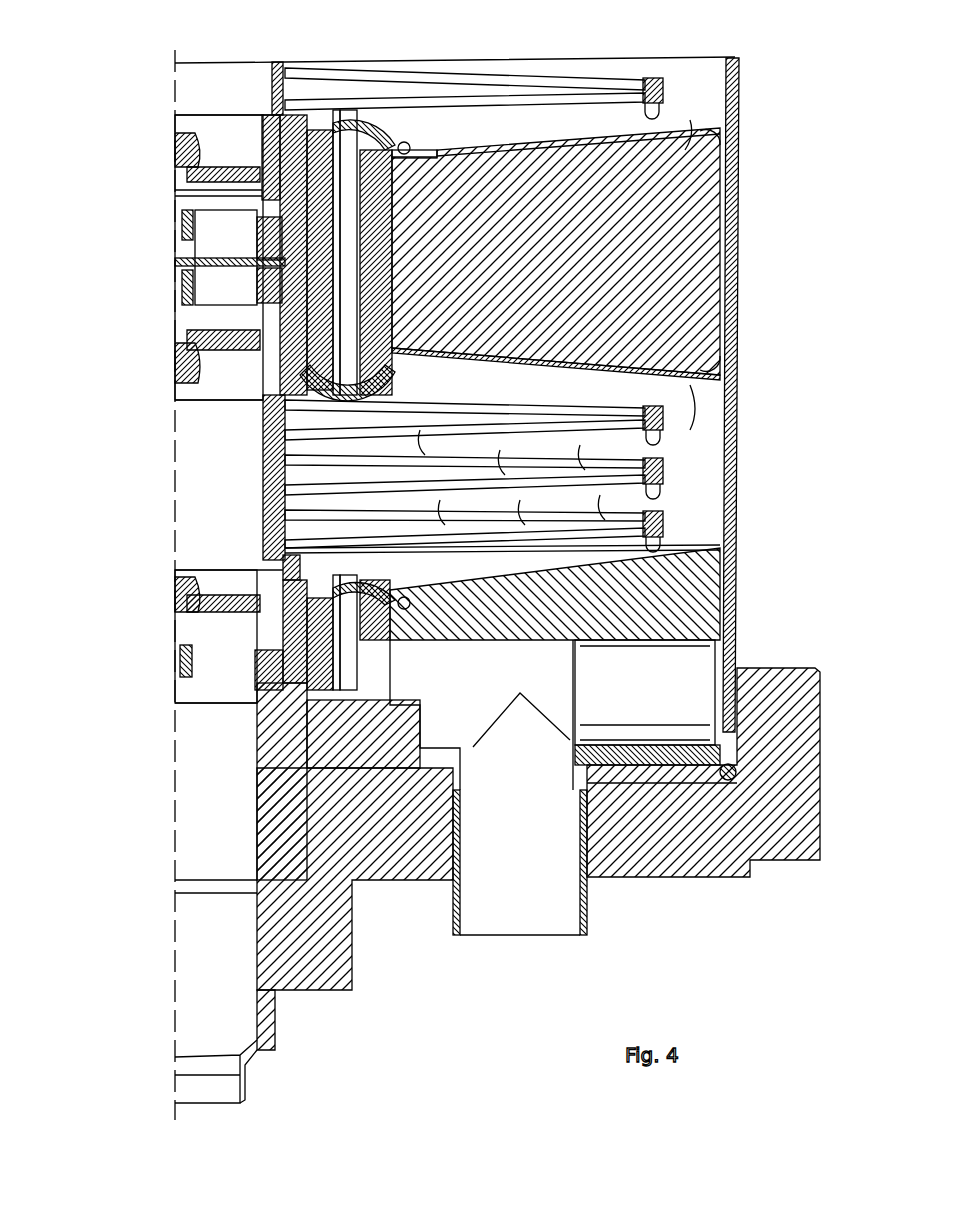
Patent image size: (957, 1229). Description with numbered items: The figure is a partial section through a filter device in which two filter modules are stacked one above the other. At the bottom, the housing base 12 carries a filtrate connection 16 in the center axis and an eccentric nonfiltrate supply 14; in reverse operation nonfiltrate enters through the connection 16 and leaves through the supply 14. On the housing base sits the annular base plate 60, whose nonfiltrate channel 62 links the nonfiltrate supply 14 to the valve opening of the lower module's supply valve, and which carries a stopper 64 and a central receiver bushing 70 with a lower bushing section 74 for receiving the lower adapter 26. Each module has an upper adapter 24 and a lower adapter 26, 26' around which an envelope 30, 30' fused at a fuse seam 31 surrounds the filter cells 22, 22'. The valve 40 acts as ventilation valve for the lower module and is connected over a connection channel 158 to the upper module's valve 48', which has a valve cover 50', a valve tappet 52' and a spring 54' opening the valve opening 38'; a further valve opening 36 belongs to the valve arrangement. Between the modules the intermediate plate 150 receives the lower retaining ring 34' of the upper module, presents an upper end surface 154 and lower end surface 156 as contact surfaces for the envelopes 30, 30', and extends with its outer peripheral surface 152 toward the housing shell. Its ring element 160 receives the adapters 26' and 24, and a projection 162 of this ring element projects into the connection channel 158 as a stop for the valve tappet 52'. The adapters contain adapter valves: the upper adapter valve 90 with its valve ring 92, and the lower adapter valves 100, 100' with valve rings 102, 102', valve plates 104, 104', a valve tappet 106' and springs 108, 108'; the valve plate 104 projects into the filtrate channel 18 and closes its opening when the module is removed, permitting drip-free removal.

The housing base 12 is at (690, 845).
The nonfiltrate supply 14 is at (520, 860).
The filtrate connection 16 is at (300, 965).
The filtrate channel 18 is at (210, 968).
The filter cell 22 is at (550, 476).
The filter cell 22' is at (474, 63).
The upper adapter 24 is at (260, 338).
The lower adapter 26 is at (200, 563).
The lower adapter 26' is at (283, 61).
The envelope 30 is at (550, 457).
The envelope 30' is at (609, 254).
The fuse seam 31 is at (435, 150).
The lower retaining ring 34' is at (407, 78).
The valve opening 36 is at (268, 405).
The valve opening 38' is at (201, 245).
The valve 40 is at (400, 372).
The valve 48' is at (463, 80).
The valve cover 50' is at (326, 198).
The valve tappet 52' is at (362, 201).
The spring 54' is at (399, 201).
The annular base plate 60 is at (700, 595).
The nonfiltrate channel 62 is at (428, 740).
The stopper 64 is at (700, 660).
The receiver bushing 70 is at (246, 833).
The lower bushing section 74 is at (300, 765).
The upper adapter valve 90 is at (150, 372).
The valve ring 92 is at (265, 305).
The lower adapter valve 100 is at (146, 636).
The lower adapter valve 100' is at (148, 257).
The valve ring 102 is at (186, 676).
The valve ring 102' is at (139, 257).
The valve plate 104 is at (149, 586).
The valve plate 104' is at (142, 145).
The valve tappet 106' is at (172, 166).
The spring 108 is at (141, 660).
The spring 108' is at (183, 260).
The intermediate plate 150 is at (705, 242).
The outer peripheral surface 152 is at (722, 300).
The upper end surface 154 is at (720, 147).
The lower end surface 156 is at (720, 360).
The connection channel 158 is at (500, 152).
The ring element 160 is at (200, 193).
The projection 162 is at (230, 264).